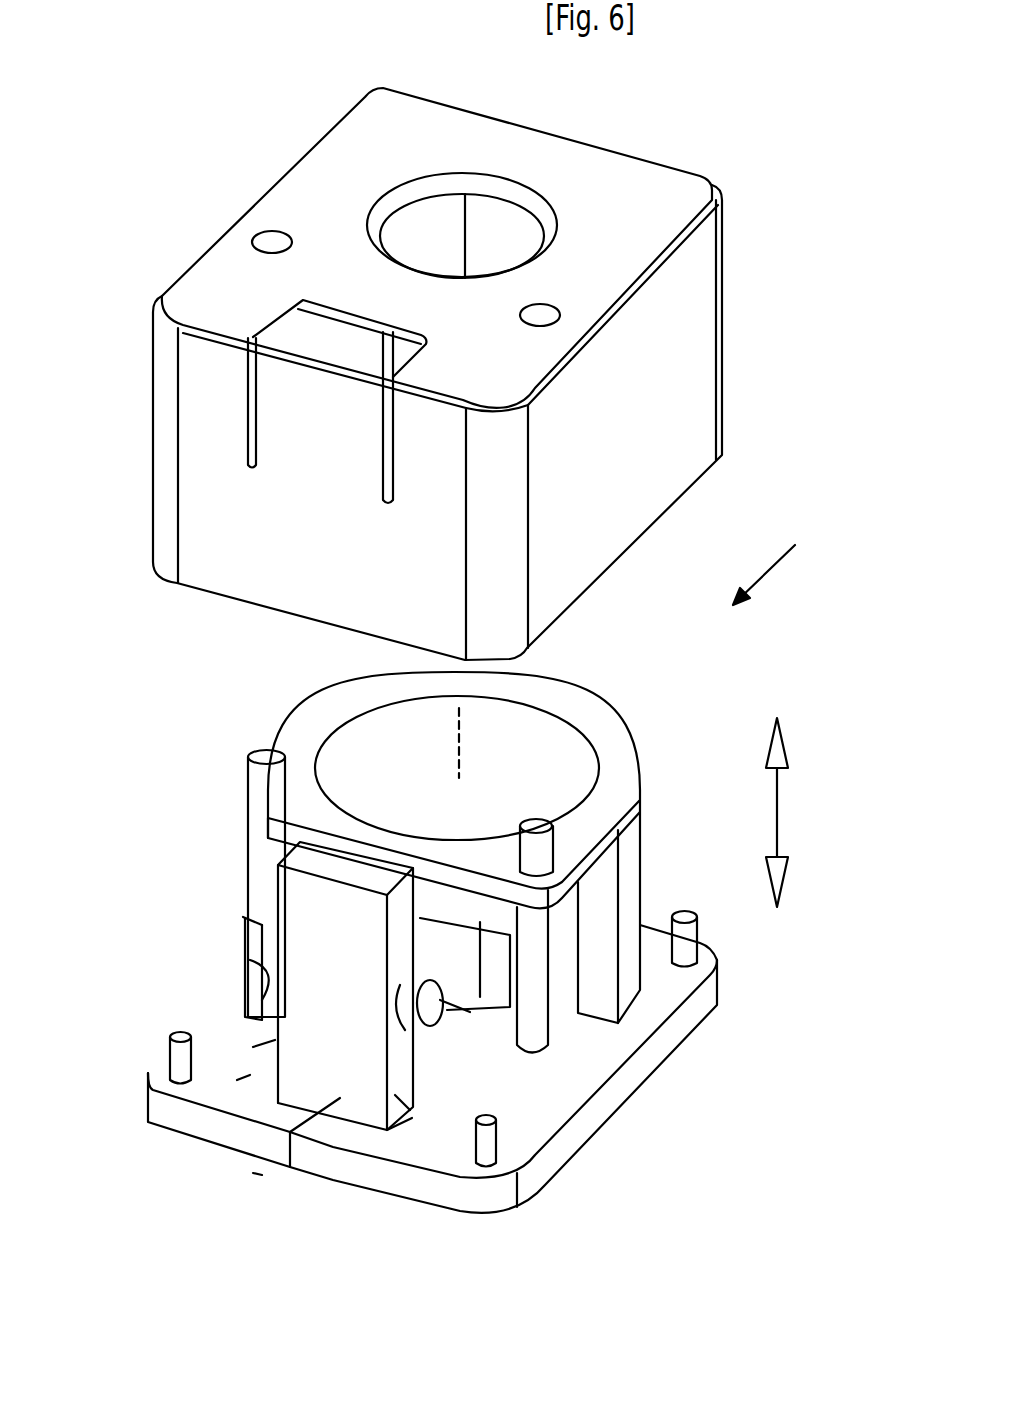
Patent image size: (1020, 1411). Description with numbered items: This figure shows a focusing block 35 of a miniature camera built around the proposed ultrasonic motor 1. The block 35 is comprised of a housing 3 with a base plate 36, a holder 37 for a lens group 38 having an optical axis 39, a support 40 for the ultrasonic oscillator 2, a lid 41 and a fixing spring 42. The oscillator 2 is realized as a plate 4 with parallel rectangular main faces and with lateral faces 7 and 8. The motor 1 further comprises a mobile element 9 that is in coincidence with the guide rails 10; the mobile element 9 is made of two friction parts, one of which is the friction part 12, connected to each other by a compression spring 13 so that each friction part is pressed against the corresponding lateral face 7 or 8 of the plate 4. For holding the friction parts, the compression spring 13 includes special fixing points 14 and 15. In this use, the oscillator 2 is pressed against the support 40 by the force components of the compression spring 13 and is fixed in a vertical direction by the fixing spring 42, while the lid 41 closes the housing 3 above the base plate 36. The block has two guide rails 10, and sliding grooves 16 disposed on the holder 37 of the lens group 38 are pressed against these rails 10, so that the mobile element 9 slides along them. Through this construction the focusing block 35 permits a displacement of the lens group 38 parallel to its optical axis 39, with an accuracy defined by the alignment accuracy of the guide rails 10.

The ultrasonic motor 1 is at (237, 1080).
The ultrasonic oscillator 2 is at (327, 1060).
The housing 3 is at (253, 1173).
The plate 4 is at (352, 1070).
The lateral face 7 is at (253, 1047).
The lateral face 8 is at (403, 1103).
The mobile element 9 is at (473, 967).
The guide rail 10 is at (268, 785).
The friction part 12 is at (270, 953).
The compression spring 13 is at (460, 1013).
The fixing point 14 is at (455, 1022).
The fixing point 15 is at (243, 917).
The sliding groove 16 is at (553, 860).
The focusing block 35 is at (785, 553).
The base plate 36 is at (692, 1012).
The holder 37 is at (607, 730).
The lens group 38 is at (517, 743).
The optical axis 39 is at (460, 737).
The support 40 is at (363, 848).
The lid 41 is at (672, 393).
The fixing spring 42 is at (322, 414).